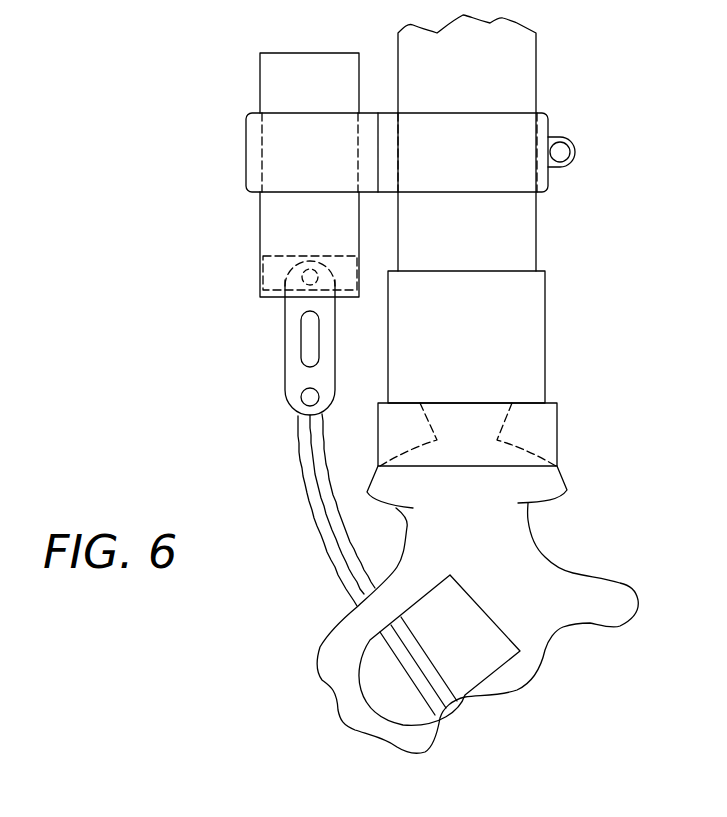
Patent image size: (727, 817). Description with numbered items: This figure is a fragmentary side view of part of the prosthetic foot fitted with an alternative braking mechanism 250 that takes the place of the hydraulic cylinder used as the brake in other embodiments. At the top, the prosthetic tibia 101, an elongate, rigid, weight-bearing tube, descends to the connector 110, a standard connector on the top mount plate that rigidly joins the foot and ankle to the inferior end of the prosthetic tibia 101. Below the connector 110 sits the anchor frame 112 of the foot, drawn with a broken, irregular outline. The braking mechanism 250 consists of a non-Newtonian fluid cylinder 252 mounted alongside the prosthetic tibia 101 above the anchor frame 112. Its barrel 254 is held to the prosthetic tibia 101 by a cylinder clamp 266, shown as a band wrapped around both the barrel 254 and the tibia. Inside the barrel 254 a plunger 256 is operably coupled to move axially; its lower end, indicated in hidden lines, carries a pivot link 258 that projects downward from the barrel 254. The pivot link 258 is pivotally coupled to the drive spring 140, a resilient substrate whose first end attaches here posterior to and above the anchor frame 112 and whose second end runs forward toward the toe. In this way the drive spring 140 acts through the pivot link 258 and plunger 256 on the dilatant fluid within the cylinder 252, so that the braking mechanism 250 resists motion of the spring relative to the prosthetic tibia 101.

The prosthetic tibia 101 is at (537, 78).
The connector 110 is at (547, 358).
The anchor frame 112 is at (562, 482).
The drive spring 140 is at (318, 525).
The braking mechanism 250 is at (175, 155).
The non-Newtonian fluid cylinder 252 is at (248, 222).
The barrel 254 is at (260, 88).
The plunger 256 is at (263, 287).
The pivot link 258 is at (283, 368).
The cylinder clamp 266 is at (525, 176).